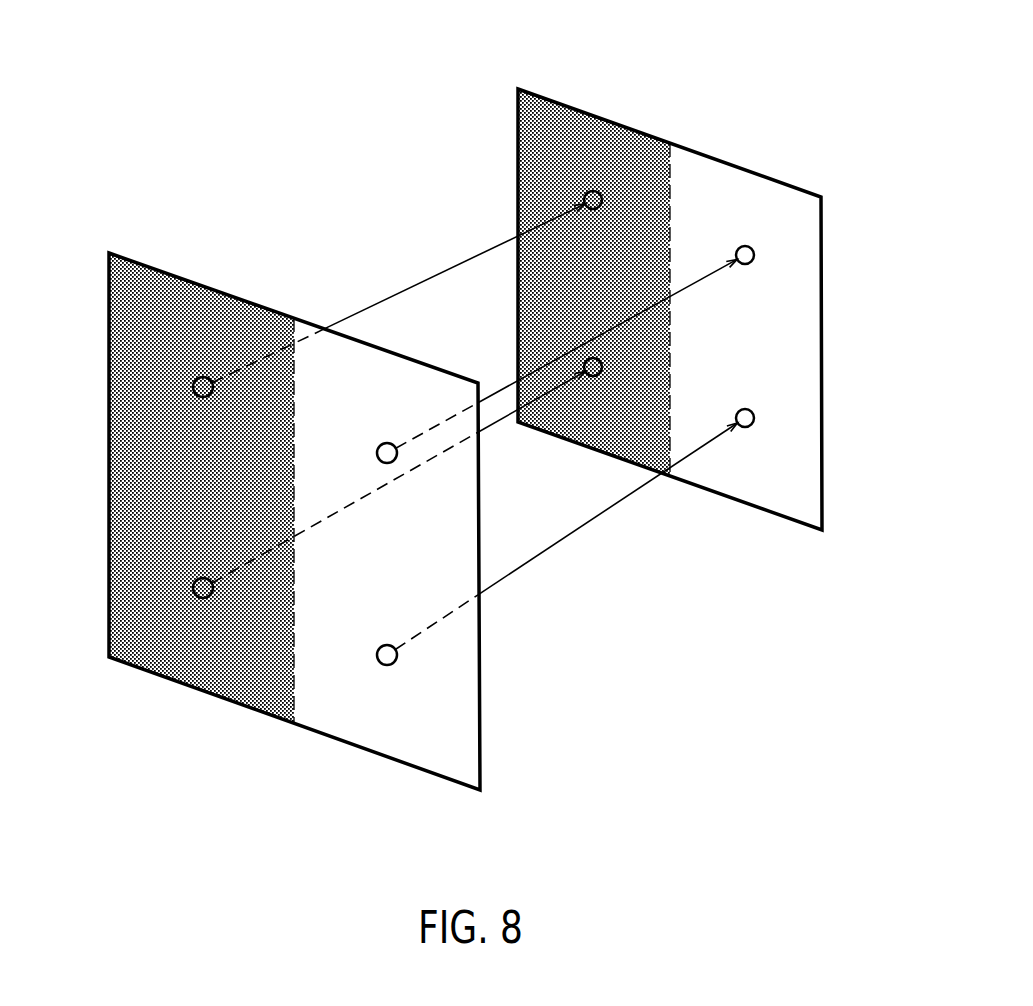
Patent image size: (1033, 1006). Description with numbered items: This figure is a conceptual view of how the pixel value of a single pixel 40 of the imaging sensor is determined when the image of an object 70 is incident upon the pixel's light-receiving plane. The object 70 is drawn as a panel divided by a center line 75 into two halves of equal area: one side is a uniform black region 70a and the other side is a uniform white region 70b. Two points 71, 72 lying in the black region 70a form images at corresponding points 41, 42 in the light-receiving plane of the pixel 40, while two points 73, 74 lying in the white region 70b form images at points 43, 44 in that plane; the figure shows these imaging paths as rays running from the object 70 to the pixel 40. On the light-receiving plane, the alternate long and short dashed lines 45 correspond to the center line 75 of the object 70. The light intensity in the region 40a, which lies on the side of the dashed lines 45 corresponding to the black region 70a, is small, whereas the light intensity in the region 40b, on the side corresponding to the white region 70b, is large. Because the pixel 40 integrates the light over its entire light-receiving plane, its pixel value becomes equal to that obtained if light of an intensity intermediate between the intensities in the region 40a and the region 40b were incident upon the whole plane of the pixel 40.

The pixel 40 is at (538, 87).
The region 40a is at (588, 128).
The region 40b is at (748, 187).
The point 41 is at (584, 199).
The point 42 is at (584, 366).
The point 43 is at (754, 259).
The point 44 is at (754, 422).
The alternate long and short dashed lines 45 is at (668, 177).
The object 70 is at (127, 250).
The black region 70a is at (183, 667).
The white region 70b is at (393, 743).
The point 71 is at (193, 386).
The point 72 is at (193, 588).
The point 73 is at (396, 461).
The point 74 is at (396, 662).
The center line 75 is at (270, 722).